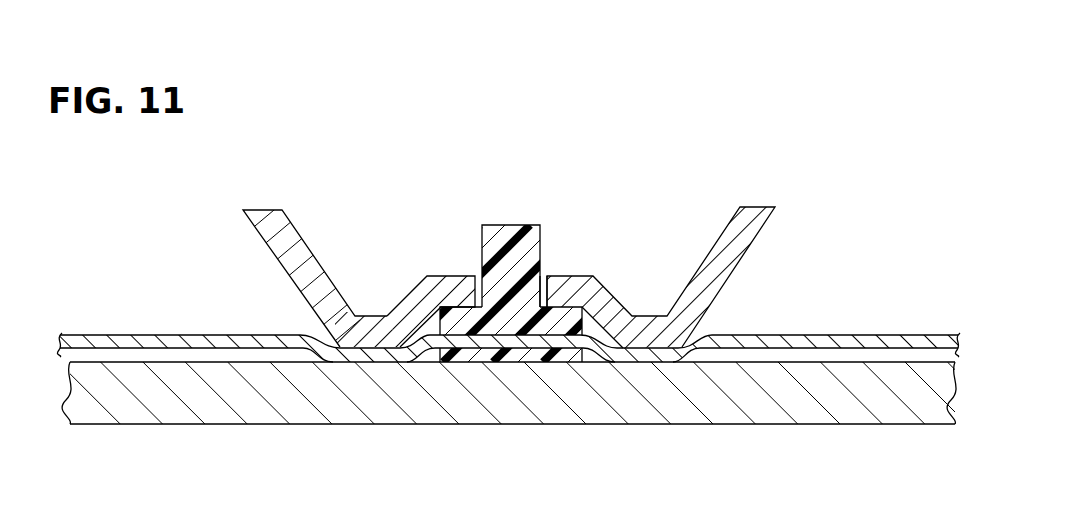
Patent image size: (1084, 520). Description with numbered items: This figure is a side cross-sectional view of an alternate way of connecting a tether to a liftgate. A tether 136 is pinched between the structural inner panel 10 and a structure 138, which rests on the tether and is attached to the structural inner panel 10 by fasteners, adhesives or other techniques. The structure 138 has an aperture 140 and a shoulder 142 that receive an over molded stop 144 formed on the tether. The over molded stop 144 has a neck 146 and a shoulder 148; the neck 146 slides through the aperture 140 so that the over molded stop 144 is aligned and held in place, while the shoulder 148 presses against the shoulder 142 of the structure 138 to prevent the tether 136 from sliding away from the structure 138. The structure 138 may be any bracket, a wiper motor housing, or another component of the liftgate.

The structural inner panel 10 is at (228, 412).
The tether 136 is at (140, 342).
The structure 138 is at (288, 237).
The aperture 140 is at (458, 322).
The shoulder 142 is at (603, 310).
The over molded stop 144 is at (562, 247).
The neck 146 is at (507, 232).
The shoulder 148 is at (450, 285).